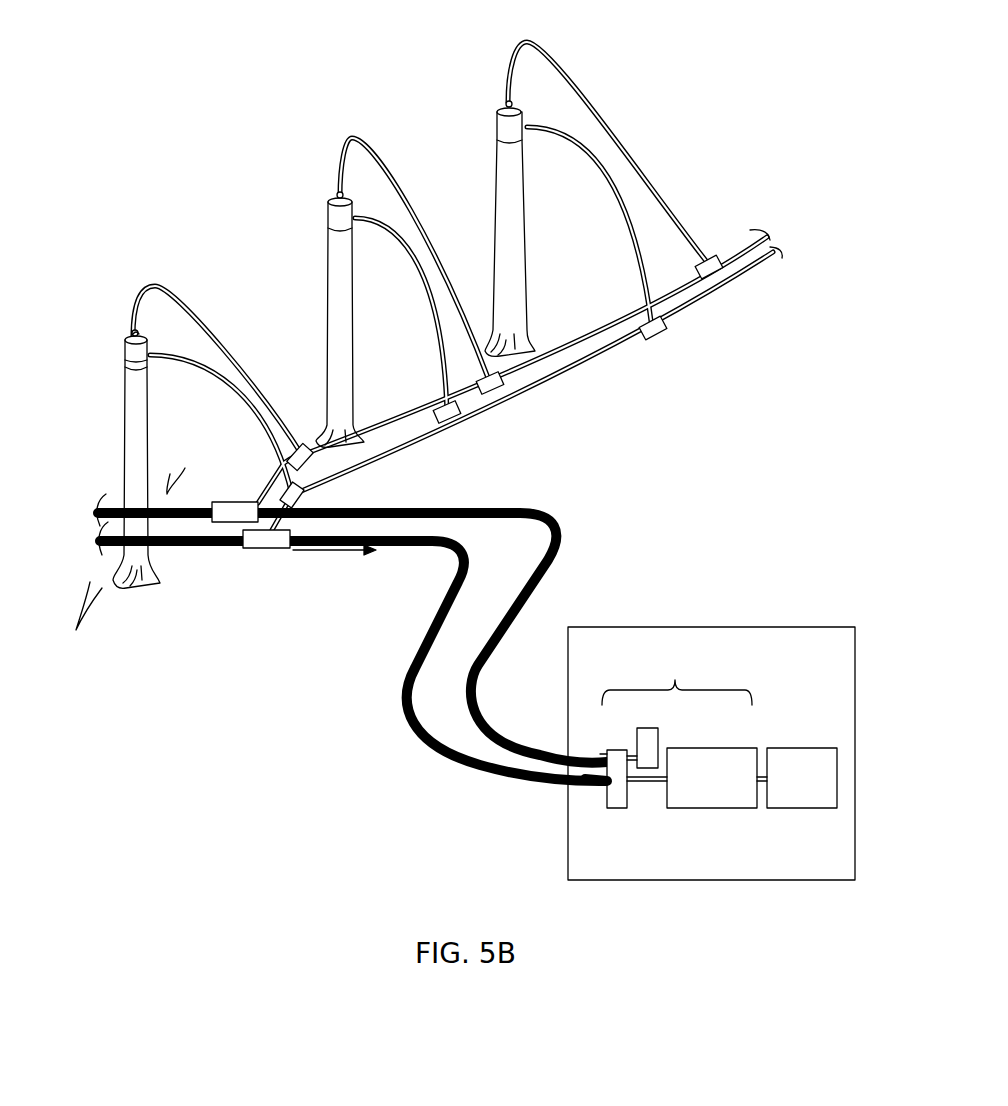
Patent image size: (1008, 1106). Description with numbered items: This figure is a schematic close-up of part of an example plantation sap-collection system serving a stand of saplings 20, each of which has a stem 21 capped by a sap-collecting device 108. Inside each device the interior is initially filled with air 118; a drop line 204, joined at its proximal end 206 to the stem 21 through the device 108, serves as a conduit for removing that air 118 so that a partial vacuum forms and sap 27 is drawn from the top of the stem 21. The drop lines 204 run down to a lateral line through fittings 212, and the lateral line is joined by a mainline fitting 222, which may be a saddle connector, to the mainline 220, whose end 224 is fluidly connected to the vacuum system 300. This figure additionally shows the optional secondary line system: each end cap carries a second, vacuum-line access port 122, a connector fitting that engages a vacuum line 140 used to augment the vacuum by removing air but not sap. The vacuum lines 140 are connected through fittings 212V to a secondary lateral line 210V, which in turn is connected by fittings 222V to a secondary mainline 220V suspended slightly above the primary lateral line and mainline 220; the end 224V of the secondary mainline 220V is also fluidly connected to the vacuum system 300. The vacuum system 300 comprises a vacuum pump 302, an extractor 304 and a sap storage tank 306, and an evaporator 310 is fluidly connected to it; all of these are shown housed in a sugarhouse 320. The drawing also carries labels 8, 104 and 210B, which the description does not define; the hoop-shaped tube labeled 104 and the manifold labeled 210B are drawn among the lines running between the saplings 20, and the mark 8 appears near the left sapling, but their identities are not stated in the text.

The tree 8 is at (182, 655).
The sapling 20 is at (324, 364).
The stem 21 is at (150, 430).
The sap 27 is at (331, 577).
The air 118 is at (320, 554).
The hoop tube 104 is at (196, 305).
The sap-collecting device 108 is at (496, 113).
The second access port 122 is at (133, 330).
The vacuum line 140 is at (591, 92).
The drop line 204 is at (612, 186).
The proximal end 206 is at (318, 466).
The branch line 210B is at (566, 348).
The secondary lateral line 210V is at (457, 419).
The fitting 212 is at (668, 340).
The fitting 212V is at (715, 256).
The mainline 220 is at (408, 651).
The secondary mainline 220V is at (443, 508).
The mainline fitting 222 is at (266, 548).
The fitting 222V is at (248, 500).
The end of mainline 224 is at (606, 800).
The end of secondary mainline 224V is at (602, 755).
The vacuum system 300 is at (718, 759).
The vacuum pump 302 is at (660, 740).
The extractor 304 is at (614, 810).
The sap storage tank 306 is at (733, 794).
The evaporator 310 is at (823, 794).
The sugarhouse 320 is at (790, 627).